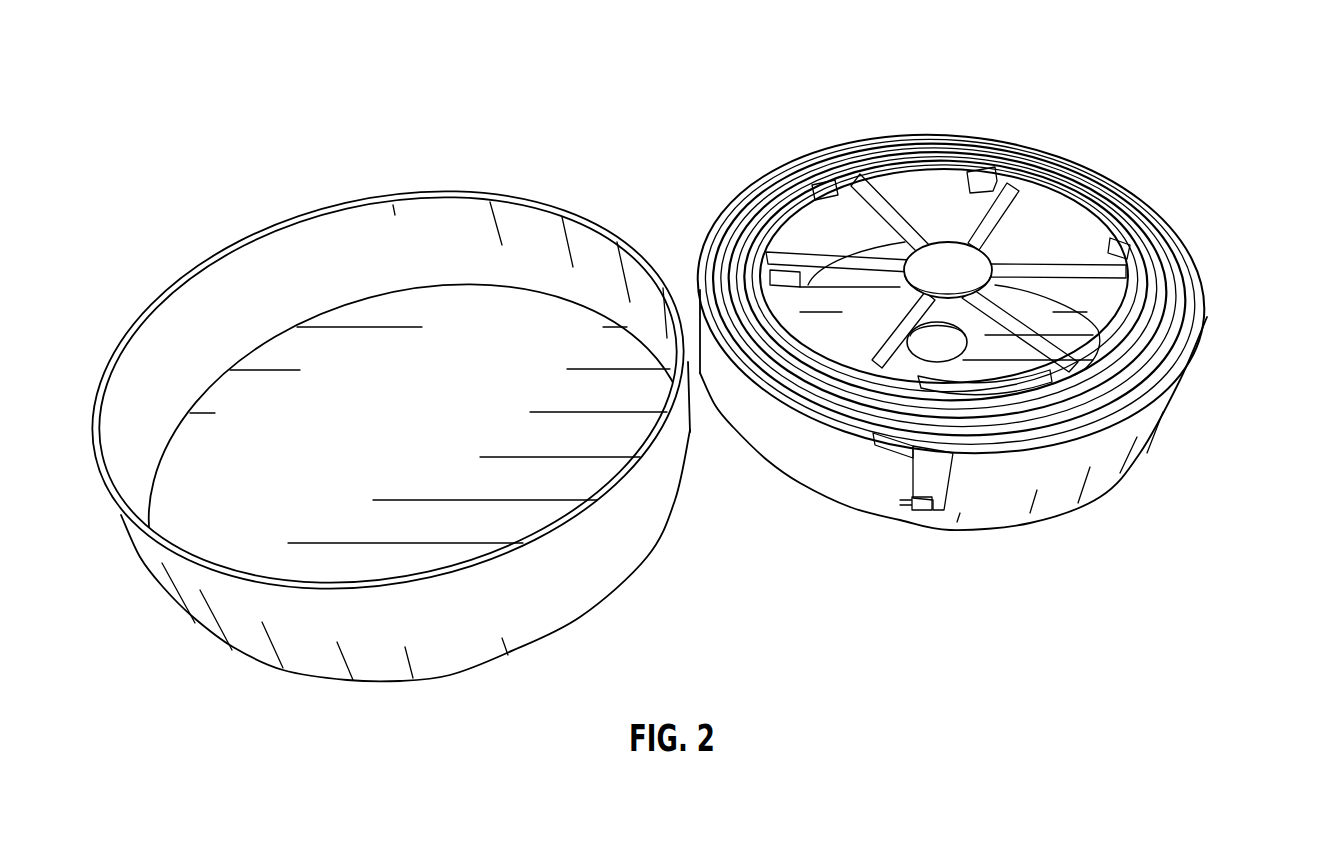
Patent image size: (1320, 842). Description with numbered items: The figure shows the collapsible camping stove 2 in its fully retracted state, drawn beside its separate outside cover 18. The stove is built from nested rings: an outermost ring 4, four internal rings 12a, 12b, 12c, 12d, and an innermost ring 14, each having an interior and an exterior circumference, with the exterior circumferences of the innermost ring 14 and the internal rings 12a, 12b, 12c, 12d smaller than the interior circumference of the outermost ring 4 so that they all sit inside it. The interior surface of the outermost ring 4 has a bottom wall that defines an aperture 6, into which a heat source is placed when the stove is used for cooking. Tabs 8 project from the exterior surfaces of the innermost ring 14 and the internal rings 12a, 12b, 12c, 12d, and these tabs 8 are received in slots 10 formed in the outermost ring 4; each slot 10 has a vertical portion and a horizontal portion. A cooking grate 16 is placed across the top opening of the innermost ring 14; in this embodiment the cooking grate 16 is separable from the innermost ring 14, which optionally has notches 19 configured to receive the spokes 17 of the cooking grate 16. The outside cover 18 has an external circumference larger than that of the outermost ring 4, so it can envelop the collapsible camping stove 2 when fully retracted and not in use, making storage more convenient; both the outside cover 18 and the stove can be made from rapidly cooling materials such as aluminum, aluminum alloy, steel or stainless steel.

The collapsible camping stove 2 is at (998, 335).
The outermost ring 4 is at (1105, 495).
The aperture 6 is at (941, 345).
The tabs 8 is at (925, 512).
The slots 10 is at (927, 485).
The internal ring 12a is at (1133, 392).
The internal ring 12b is at (1140, 372).
The internal ring 12c is at (1150, 342).
The internal ring 12d is at (1152, 302).
The innermost ring 14 is at (797, 236).
The cooking grate 16 is at (942, 248).
The spokes 17 is at (858, 188).
The outside cover 18 is at (616, 232).
The notches 19 is at (987, 175).